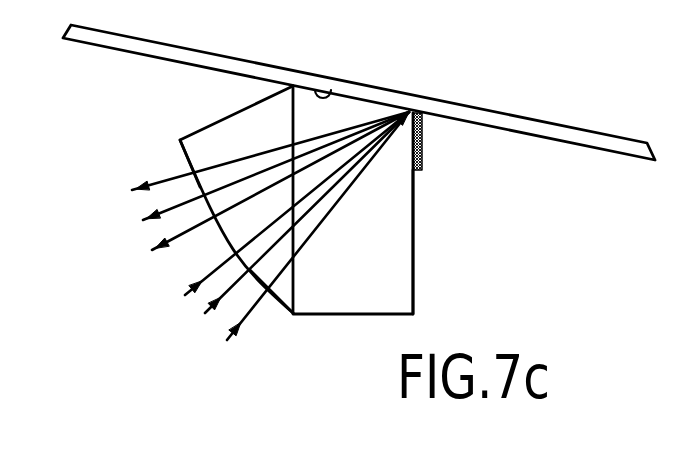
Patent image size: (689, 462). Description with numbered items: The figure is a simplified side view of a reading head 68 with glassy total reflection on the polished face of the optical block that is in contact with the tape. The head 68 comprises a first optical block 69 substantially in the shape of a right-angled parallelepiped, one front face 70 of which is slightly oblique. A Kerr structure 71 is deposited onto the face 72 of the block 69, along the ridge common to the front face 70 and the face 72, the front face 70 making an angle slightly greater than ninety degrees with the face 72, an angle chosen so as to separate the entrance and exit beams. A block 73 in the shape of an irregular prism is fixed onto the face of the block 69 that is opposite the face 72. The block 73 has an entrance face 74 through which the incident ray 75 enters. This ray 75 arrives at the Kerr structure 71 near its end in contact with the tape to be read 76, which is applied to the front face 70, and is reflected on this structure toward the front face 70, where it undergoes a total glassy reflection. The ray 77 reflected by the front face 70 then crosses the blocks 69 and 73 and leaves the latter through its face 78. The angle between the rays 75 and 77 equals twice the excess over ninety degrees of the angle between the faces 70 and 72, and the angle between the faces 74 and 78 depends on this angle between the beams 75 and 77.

The head 68 is at (125, 308).
The first optical block 69 is at (402, 275).
The front face 70 is at (337, 82).
The Kerr structure 71 is at (420, 133).
The face 72 is at (414, 222).
The block 73 is at (220, 142).
The entrance face 74 is at (280, 300).
The incident ray 75 is at (217, 310).
The tape to be read 76 is at (581, 147).
The reflected ray 77 is at (153, 221).
The face 78 is at (182, 160).